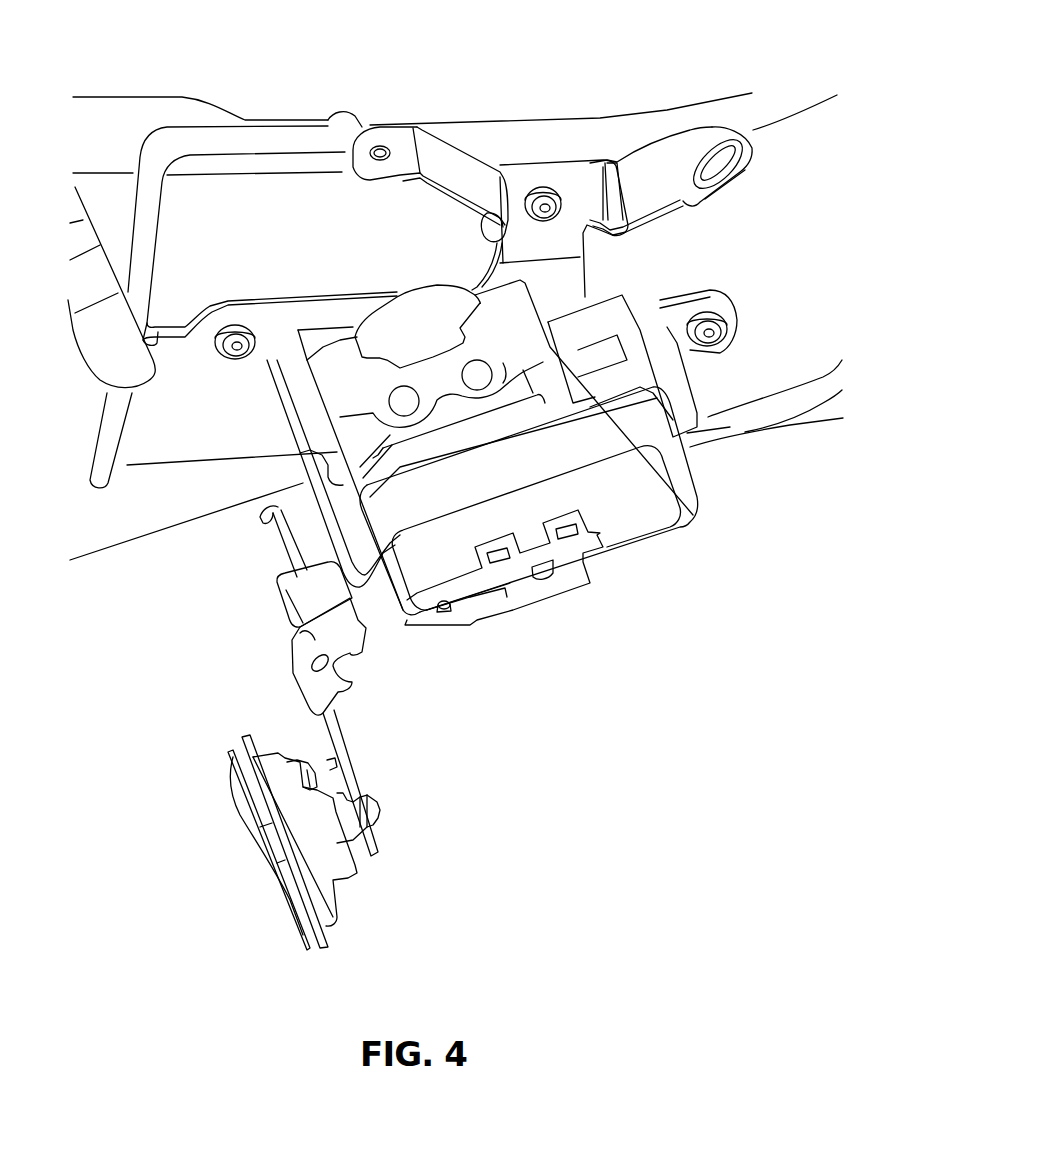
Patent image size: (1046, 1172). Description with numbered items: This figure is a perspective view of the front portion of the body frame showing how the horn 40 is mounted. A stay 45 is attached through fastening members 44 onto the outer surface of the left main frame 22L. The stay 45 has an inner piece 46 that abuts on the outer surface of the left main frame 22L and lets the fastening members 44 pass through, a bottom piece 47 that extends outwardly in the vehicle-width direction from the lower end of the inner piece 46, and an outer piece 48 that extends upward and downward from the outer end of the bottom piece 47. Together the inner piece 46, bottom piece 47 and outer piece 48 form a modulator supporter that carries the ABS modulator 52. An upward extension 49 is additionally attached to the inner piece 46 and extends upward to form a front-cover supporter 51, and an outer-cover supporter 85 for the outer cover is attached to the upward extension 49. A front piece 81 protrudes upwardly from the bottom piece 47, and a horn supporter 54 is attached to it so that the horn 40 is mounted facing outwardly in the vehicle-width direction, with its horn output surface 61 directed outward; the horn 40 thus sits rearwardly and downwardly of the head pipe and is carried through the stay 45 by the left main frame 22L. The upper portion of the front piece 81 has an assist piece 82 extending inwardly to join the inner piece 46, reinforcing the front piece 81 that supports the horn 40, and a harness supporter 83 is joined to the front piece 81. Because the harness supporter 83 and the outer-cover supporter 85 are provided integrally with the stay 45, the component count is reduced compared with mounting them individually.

The left main frame 22L is at (650, 250).
The outer-cover supporter 85 is at (731, 130).
The inner piece 46 is at (323, 317).
The front-cover supporter 51 is at (385, 145).
The upward extension 49 is at (465, 140).
The fastening members 44 is at (231, 325).
The ABS modulator 52 is at (643, 512).
The bottom piece 47 is at (580, 585).
The outer piece 48 is at (485, 597).
The stay 45 is at (541, 612).
The assist piece 82 is at (275, 398).
The harness supporter 83 is at (272, 505).
The front piece 81 is at (325, 533).
The horn supporter 54 is at (330, 737).
The horn 40 is at (242, 853).
The horn output surface 61 is at (263, 867).